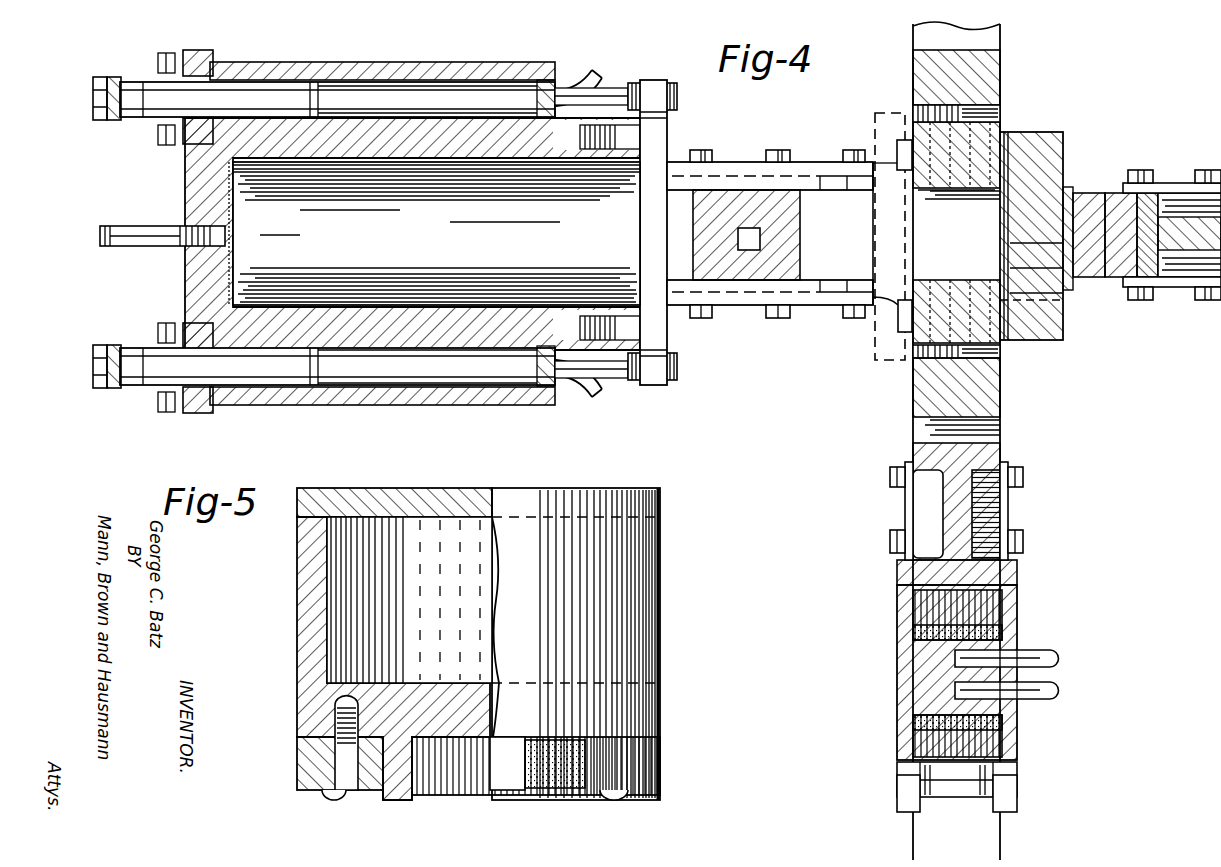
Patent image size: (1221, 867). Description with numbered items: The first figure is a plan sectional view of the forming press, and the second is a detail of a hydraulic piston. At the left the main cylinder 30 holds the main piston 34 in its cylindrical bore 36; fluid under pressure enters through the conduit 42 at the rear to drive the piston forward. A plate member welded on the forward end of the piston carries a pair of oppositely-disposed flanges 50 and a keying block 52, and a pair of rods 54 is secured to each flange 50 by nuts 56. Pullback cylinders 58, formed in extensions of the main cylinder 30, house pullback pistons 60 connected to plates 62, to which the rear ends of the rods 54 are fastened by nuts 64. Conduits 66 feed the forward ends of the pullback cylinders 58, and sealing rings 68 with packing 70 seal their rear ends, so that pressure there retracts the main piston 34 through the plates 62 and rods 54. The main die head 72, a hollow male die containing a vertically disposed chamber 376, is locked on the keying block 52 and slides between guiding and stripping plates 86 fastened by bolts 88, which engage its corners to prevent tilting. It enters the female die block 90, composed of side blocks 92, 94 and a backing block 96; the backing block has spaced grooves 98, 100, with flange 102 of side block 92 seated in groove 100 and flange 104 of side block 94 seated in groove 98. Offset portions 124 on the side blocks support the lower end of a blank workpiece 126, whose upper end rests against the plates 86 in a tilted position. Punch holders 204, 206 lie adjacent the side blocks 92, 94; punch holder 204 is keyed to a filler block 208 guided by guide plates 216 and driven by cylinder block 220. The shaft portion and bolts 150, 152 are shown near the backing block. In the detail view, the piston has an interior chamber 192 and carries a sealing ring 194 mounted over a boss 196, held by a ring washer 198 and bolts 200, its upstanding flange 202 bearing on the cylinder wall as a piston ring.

In FIG. 4, the main cylinder 30 is at (187, 292).
In FIG. 4, the main piston 34 is at (233, 256).
In FIG. 4, the cylindrical bore 36 is at (304, 165).
In FIG. 4, the conduit 42 is at (124, 228).
In FIG. 4, the flanges 50 is at (658, 131).
In FIG. 4, the keying block 52 is at (672, 213).
In FIG. 4, the rods 54 is at (616, 88).
In FIG. 4, the nuts 56 is at (648, 83).
In FIG. 5, the nuts 56 is at (660, 566).
In FIG. 4, the pullback cylinders 58 is at (396, 86).
In FIG. 4, the pullback pistons 60 is at (274, 84).
In FIG. 4, the plates 62 is at (110, 121).
In FIG. 4, the nuts 64 is at (93, 87).
In FIG. 4, the conduits 66 is at (578, 82).
In FIG. 4, the sealing rings 68 is at (166, 55).
In FIG. 4, the packing 70 is at (214, 63).
In FIG. 4, the main die head 72 is at (800, 235).
In FIG. 4, the guiding and stripping plates 86 is at (798, 170).
In FIG. 4, the bolts 88 is at (772, 160).
In FIG. 4, the female die block 90 is at (1060, 328).
In FIG. 4, the side block 92 is at (998, 350).
In FIG. 4, the side block 94 is at (985, 126).
In FIG. 4, the backing block 96 is at (1063, 164).
In FIG. 4, the groove 98 is at (1010, 156).
In FIG. 4, the groove 100 is at (1062, 294).
In FIG. 4, the flange 102 is at (1000, 288).
In FIG. 4, the flange 104 is at (1000, 183).
In FIG. 4, the offset portions 124 is at (900, 165).
In FIG. 4, the blank workpiece 126 is at (895, 365).
In FIG. 4, the shaft 150 is at (1152, 287).
In FIG. 4, the bolt 152 is at (1180, 160).
In FIG. 5, the interior chamber 192 is at (332, 584).
In FIG. 5, the sealing ring 194 is at (300, 771).
In FIG. 5, the boss 196 is at (392, 797).
In FIG. 5, the ring washer 198 is at (300, 752).
In FIG. 5, the bolts 200 is at (322, 793).
In FIG. 5, the upstanding flange 202 is at (662, 786).
In FIG. 4, the punch holder 204 is at (986, 394).
In FIG. 4, the punch holder 206 is at (985, 88).
In FIG. 4, the filler block 208 is at (1003, 450).
In FIG. 4, the guide plates 216 is at (905, 512).
In FIG. 4, the cylinder block 220 is at (1008, 616).
In FIG. 4, the vertically disposed chamber 376 is at (760, 240).